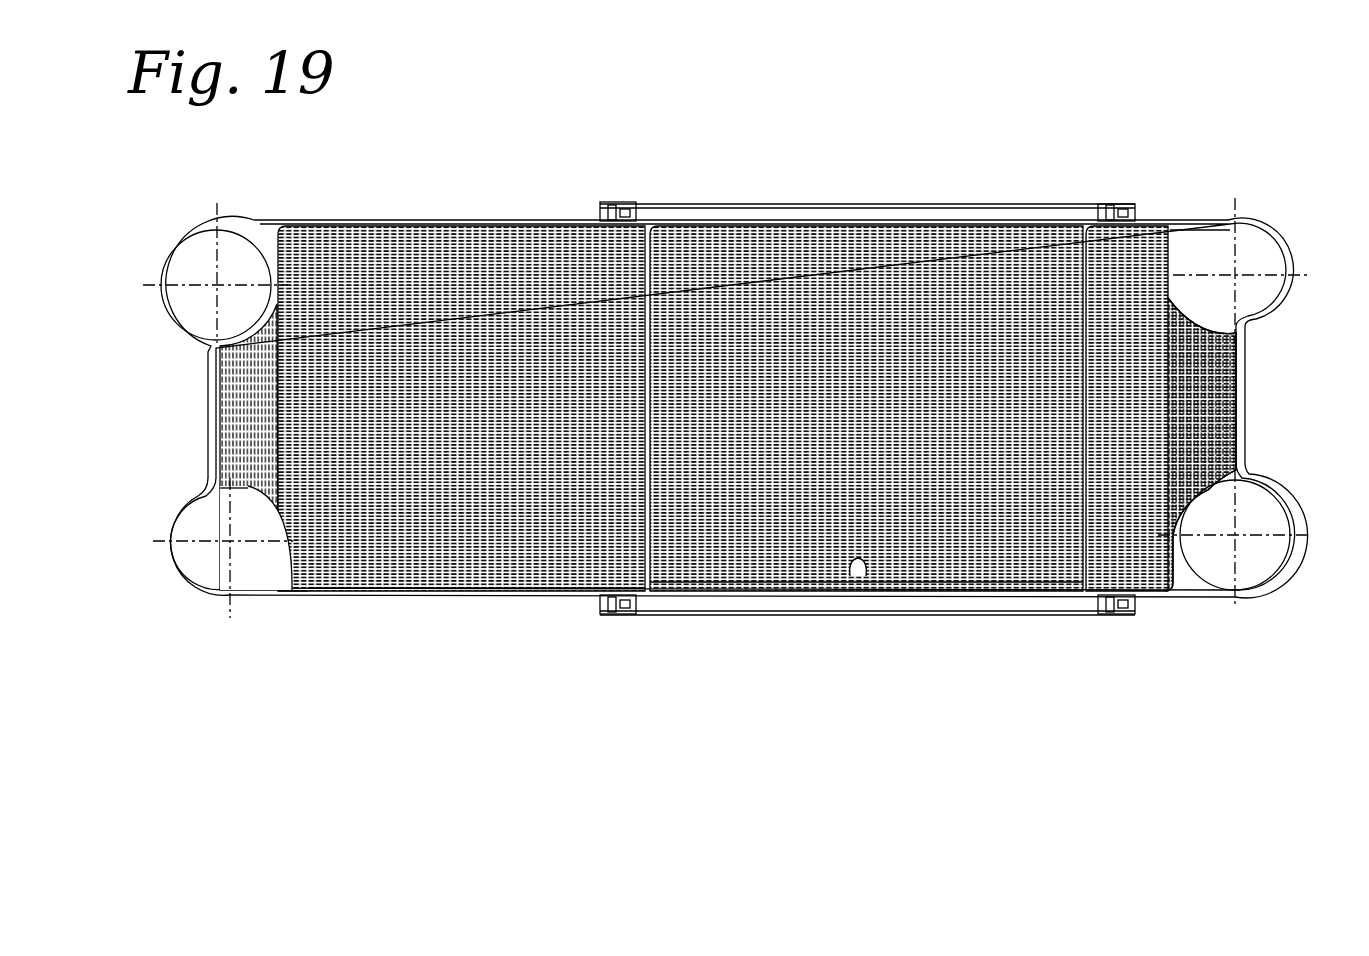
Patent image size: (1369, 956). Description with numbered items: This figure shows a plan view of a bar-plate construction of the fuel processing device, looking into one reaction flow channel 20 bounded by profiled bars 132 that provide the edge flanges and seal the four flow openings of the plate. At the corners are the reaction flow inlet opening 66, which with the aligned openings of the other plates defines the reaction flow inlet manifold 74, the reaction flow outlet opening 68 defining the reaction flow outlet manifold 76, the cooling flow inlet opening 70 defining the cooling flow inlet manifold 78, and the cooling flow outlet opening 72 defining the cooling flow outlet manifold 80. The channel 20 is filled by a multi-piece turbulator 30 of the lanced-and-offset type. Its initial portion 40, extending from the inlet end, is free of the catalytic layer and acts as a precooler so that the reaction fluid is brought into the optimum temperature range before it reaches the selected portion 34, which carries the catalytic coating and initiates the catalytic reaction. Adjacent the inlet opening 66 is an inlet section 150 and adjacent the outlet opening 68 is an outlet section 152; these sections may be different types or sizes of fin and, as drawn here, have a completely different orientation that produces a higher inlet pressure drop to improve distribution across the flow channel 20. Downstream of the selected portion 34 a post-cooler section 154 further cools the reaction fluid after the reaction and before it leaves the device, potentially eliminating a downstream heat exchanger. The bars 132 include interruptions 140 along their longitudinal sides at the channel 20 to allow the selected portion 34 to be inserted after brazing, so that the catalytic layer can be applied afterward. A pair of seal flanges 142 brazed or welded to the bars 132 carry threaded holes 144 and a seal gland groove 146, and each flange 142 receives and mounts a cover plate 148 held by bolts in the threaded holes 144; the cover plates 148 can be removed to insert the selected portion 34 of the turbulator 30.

The reaction flow channel 20 is at (983, 580).
The turbulator 30 is at (508, 581).
The selected portion 34 is at (1078, 164).
The initial portion 40 is at (639, 164).
The reaction flow inlet opening 66 is at (240, 565).
The reaction flow outlet opening 68 is at (1248, 262).
The cooling flow inlet opening 70 is at (1268, 515).
The cooling flow outlet opening 72 is at (228, 245).
The reaction flow inlet manifold 74 is at (212, 545).
The reaction flow outlet manifold 76 is at (1237, 252).
The cooling flow inlet manifold 78 is at (1240, 508).
The cooling flow outlet manifold 80 is at (185, 262).
The profiled bar 132 is at (298, 586).
The interruption 140 is at (852, 562).
The seal flange 142 is at (590, 205).
The threaded hole 144 is at (605, 197).
The seal gland groove 146 is at (1100, 197).
The cover plate 148 is at (703, 193).
The inlet section 150 is at (225, 390).
The outlet section 152 is at (1113, 318).
The post-cooler section 154 is at (1215, 370).